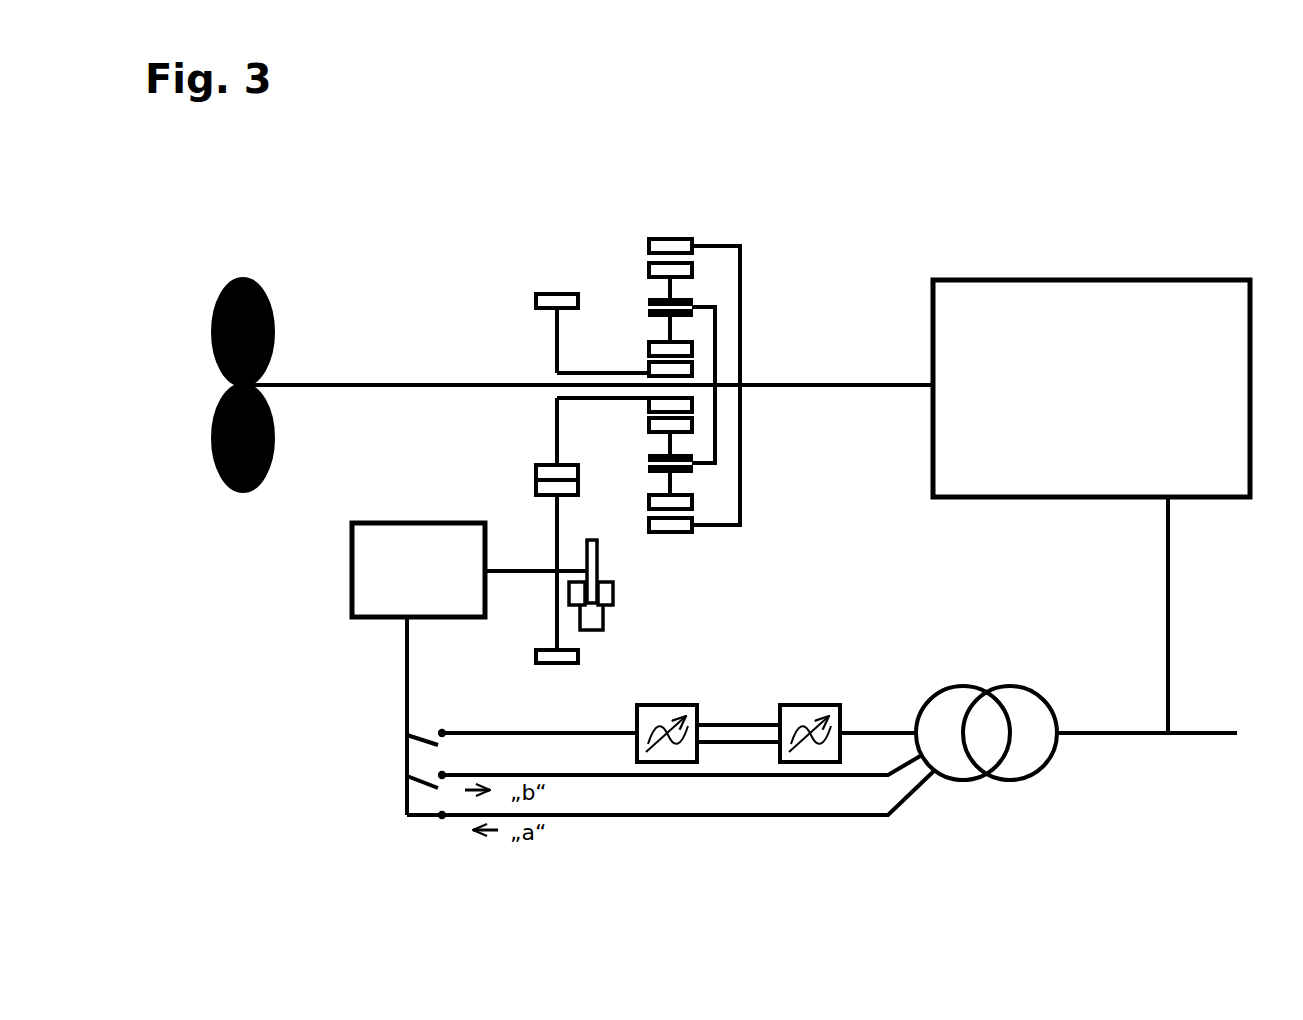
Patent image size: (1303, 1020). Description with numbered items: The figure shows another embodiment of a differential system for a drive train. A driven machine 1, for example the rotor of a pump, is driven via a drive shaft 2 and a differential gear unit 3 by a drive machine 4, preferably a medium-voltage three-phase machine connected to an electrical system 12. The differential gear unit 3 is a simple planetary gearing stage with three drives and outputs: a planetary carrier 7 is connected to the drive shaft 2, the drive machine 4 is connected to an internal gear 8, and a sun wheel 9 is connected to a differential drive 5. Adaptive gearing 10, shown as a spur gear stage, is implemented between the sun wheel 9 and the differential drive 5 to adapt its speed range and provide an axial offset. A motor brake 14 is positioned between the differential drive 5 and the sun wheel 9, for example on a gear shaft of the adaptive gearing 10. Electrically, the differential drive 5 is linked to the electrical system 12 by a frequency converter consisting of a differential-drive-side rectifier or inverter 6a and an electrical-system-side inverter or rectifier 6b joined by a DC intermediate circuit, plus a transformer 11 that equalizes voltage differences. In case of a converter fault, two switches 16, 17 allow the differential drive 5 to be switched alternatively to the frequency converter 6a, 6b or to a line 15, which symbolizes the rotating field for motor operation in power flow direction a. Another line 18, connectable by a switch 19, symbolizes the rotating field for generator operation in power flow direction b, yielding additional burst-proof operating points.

The driven machine 1 is at (245, 276).
The drive shaft 2 is at (330, 383).
The differential gear unit 3 is at (796, 322).
The drive machine 4 is at (1092, 280).
The differential drive 5 is at (352, 595).
The differential-drive-side rectifier or inverter 6a is at (690, 707).
The electrical-system-side inverter or rectifier 6b is at (827, 707).
The planetary carrier 7 is at (660, 300).
The internal gear 8 is at (688, 239).
The sun wheel 9 is at (693, 372).
The adaptive gearing 10 is at (530, 440).
The transformer 11 is at (957, 788).
The electrical system 12 is at (1208, 735).
The motor brake 14 is at (632, 594).
The line 15 is at (840, 817).
The switch 16 is at (408, 740).
The switch 17 is at (423, 818).
The line 18 is at (710, 777).
The switch 19 is at (410, 778).